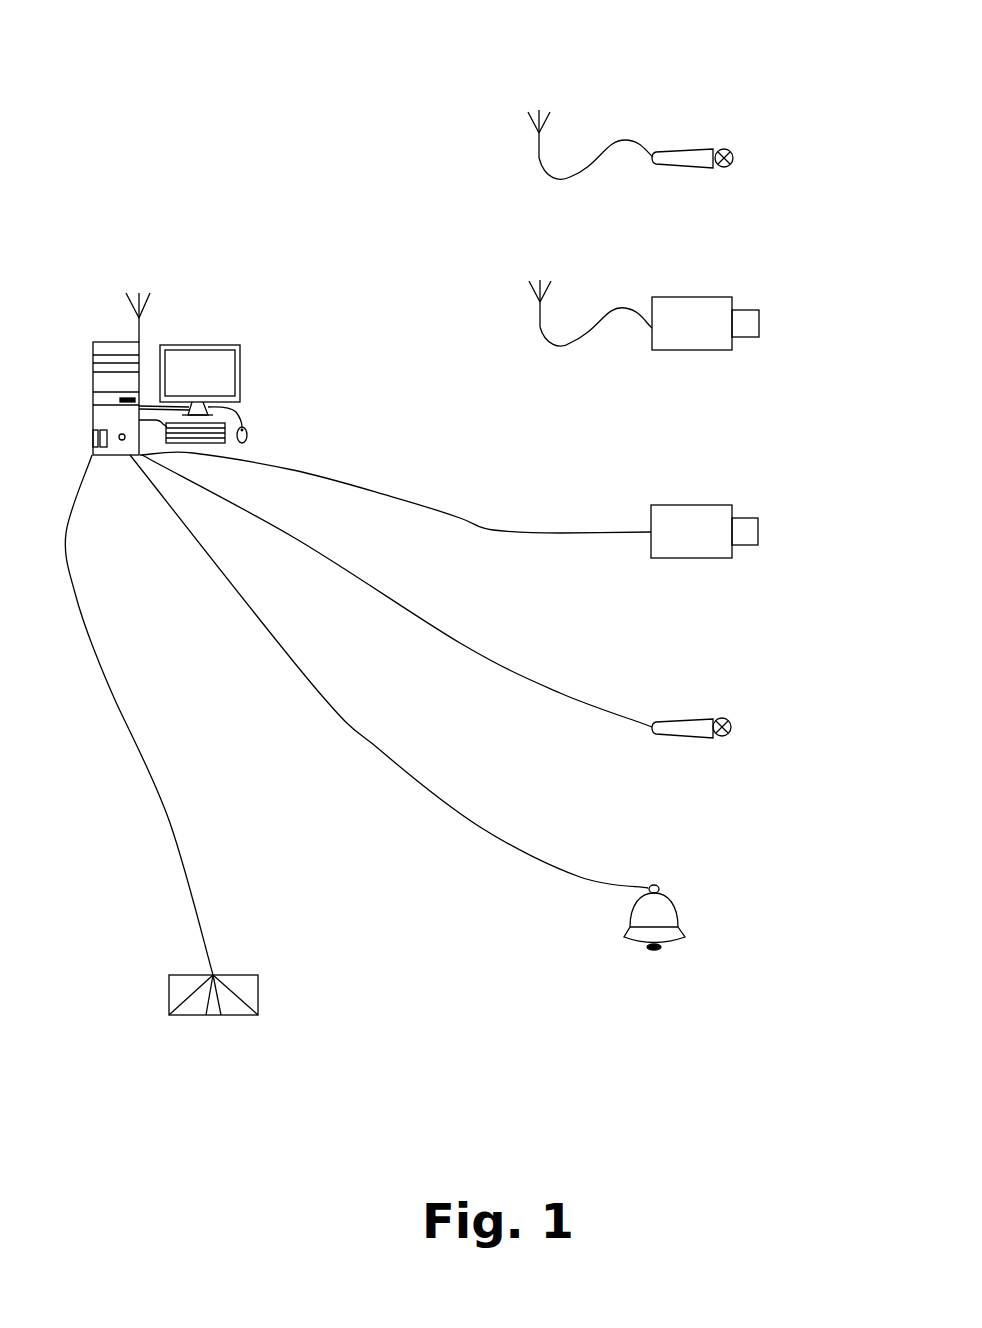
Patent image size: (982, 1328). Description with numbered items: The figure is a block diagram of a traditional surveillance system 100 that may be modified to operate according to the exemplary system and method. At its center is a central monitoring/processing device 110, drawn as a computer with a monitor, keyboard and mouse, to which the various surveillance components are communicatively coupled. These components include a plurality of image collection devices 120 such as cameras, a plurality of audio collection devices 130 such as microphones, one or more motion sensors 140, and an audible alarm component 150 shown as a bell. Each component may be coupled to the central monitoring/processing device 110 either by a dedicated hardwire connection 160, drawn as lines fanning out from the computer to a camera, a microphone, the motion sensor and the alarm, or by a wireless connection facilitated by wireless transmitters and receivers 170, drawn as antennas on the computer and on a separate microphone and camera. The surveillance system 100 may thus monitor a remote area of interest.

The surveillance system 100 is at (103, 152).
The central monitoring/processing device 110 is at (93, 342).
The image collection device 120 is at (692, 350).
The audio collection device 130 is at (733, 158).
The motion sensor 140 is at (210, 1016).
The audible alarm component 150 is at (648, 950).
The dedicated hardwire connection 160 is at (490, 527).
The wireless transmitters and receivers 170 is at (140, 318).